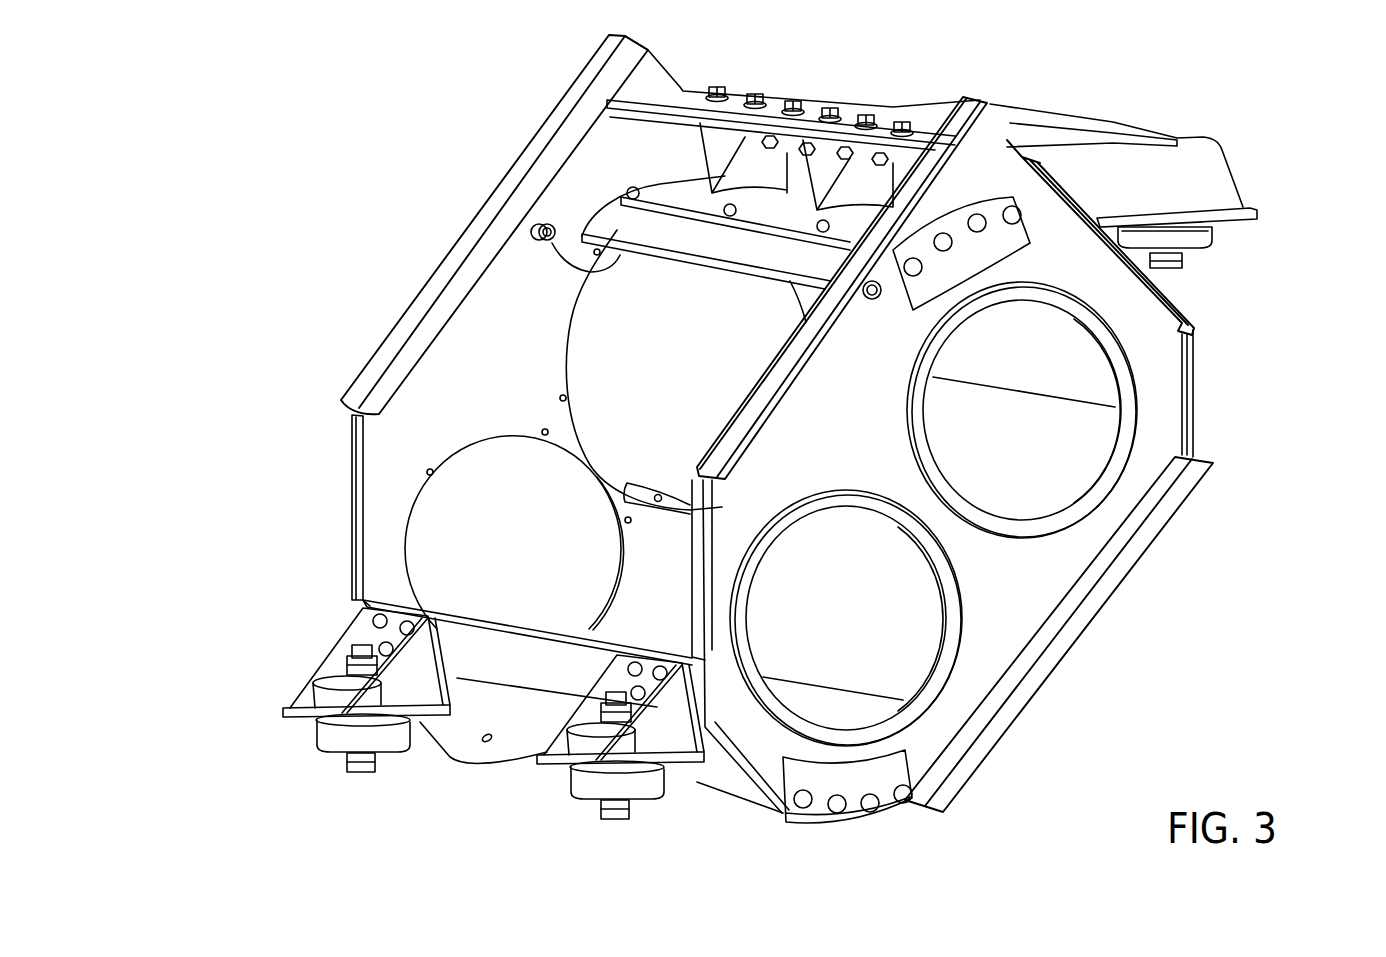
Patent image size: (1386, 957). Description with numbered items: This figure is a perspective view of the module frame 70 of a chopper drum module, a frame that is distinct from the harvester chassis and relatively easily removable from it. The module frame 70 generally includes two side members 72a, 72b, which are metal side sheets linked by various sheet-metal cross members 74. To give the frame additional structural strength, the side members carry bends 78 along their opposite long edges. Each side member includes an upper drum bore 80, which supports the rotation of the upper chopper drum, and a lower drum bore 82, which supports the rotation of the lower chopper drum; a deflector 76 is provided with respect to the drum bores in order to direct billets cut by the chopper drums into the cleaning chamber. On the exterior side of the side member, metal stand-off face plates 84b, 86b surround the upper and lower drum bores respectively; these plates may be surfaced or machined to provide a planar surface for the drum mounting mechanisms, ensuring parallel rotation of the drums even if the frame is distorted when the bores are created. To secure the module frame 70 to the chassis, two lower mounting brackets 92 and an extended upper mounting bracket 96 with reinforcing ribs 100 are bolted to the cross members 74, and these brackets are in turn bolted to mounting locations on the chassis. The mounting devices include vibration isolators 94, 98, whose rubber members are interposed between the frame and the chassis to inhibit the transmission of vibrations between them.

The module frame 70 is at (769, 464).
The side member 72a is at (393, 432).
The side member 72b is at (1035, 593).
The cross member 74 is at (703, 123).
The deflector 76 is at (537, 230).
The bend 78 is at (370, 355).
The upper drum bore 80 is at (601, 331).
The lower drum bore 82 is at (480, 532).
The face plate 84b is at (1107, 473).
The face plate 86b is at (948, 628).
The lower mounting bracket 92 is at (345, 634).
The vibration isolator 94 is at (283, 736).
The extended upper mounting bracket 96 is at (1247, 210).
The vibration isolator 98 is at (1196, 241).
The reinforcing rib 100 is at (1000, 100).